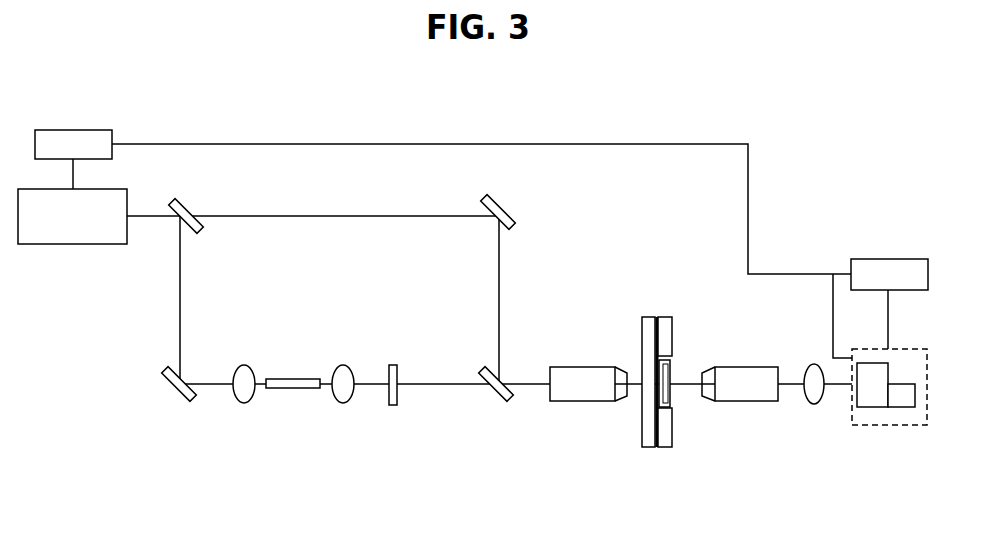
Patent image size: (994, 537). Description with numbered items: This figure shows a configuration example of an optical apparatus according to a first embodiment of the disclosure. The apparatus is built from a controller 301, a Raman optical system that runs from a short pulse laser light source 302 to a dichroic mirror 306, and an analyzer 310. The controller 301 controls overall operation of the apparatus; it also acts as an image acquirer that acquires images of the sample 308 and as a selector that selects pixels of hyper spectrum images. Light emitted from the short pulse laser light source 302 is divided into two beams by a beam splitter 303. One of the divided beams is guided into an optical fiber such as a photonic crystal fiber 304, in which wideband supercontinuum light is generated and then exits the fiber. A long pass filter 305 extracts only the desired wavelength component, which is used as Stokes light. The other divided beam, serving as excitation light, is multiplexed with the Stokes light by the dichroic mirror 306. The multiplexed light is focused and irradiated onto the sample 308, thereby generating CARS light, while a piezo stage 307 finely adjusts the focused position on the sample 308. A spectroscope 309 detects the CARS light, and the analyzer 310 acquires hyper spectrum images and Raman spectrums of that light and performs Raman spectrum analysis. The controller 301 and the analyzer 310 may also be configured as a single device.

The controller 301 is at (73, 140).
The short pulse laser light source 302 is at (77, 240).
The beam splitter 303 is at (200, 230).
The photonic crystal fiber 304 is at (292, 388).
The long pass filter 305 is at (391, 394).
The dichroic mirror 306 is at (495, 394).
The piezo stage 307 is at (653, 317).
The sample 308 is at (672, 368).
The spectroscope 309 is at (860, 424).
The analyzer 310 is at (889, 265).